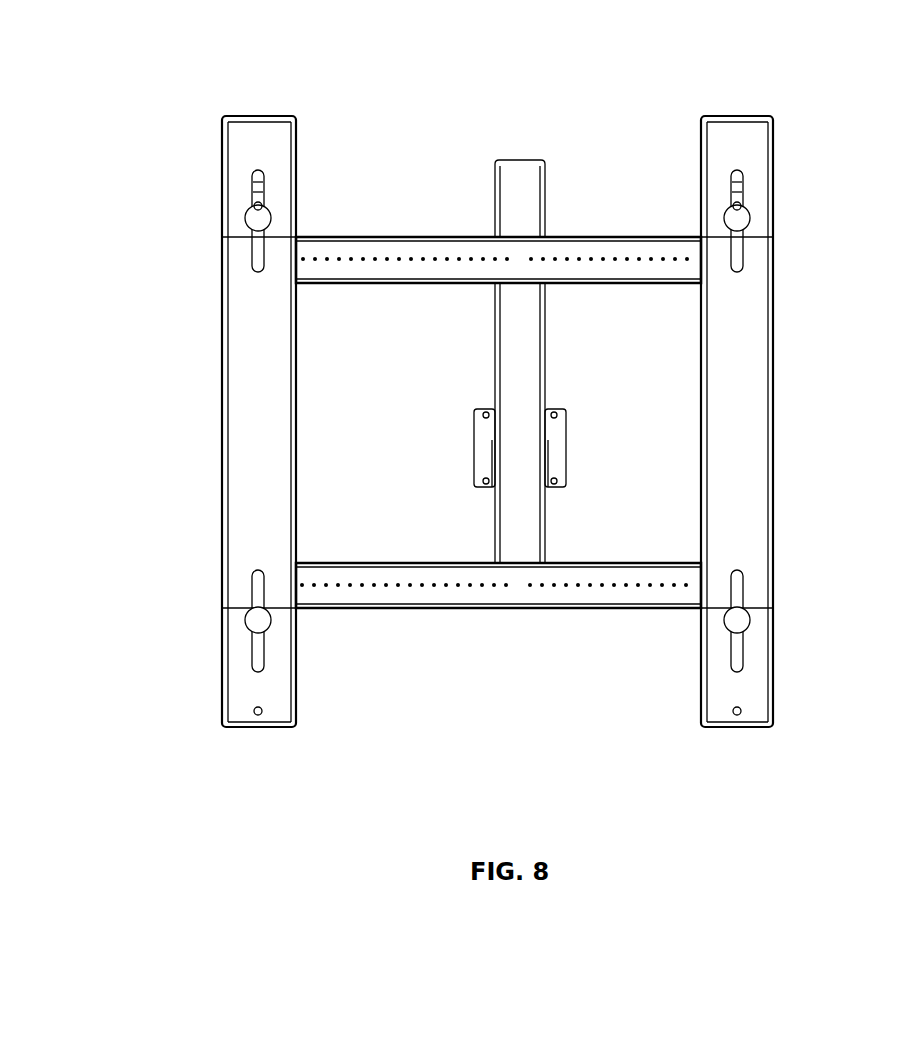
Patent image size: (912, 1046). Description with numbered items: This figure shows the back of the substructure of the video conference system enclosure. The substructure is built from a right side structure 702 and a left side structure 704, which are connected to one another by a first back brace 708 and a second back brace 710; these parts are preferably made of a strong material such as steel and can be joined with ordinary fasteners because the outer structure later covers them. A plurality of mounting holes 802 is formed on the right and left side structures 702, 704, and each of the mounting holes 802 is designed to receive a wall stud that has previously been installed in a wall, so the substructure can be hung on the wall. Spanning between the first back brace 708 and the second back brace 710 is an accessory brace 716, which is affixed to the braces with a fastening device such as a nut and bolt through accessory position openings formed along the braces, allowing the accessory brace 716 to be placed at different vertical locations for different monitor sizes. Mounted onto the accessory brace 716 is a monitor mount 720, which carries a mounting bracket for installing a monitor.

The right side structure 702 is at (285, 136).
The left side structure 704 is at (758, 140).
The first back brace 708 is at (343, 548).
The second back brace 710 is at (364, 226).
The accessory brace 716 is at (517, 348).
The monitor mount 720 is at (548, 446).
The mounting holes 802 is at (255, 225).